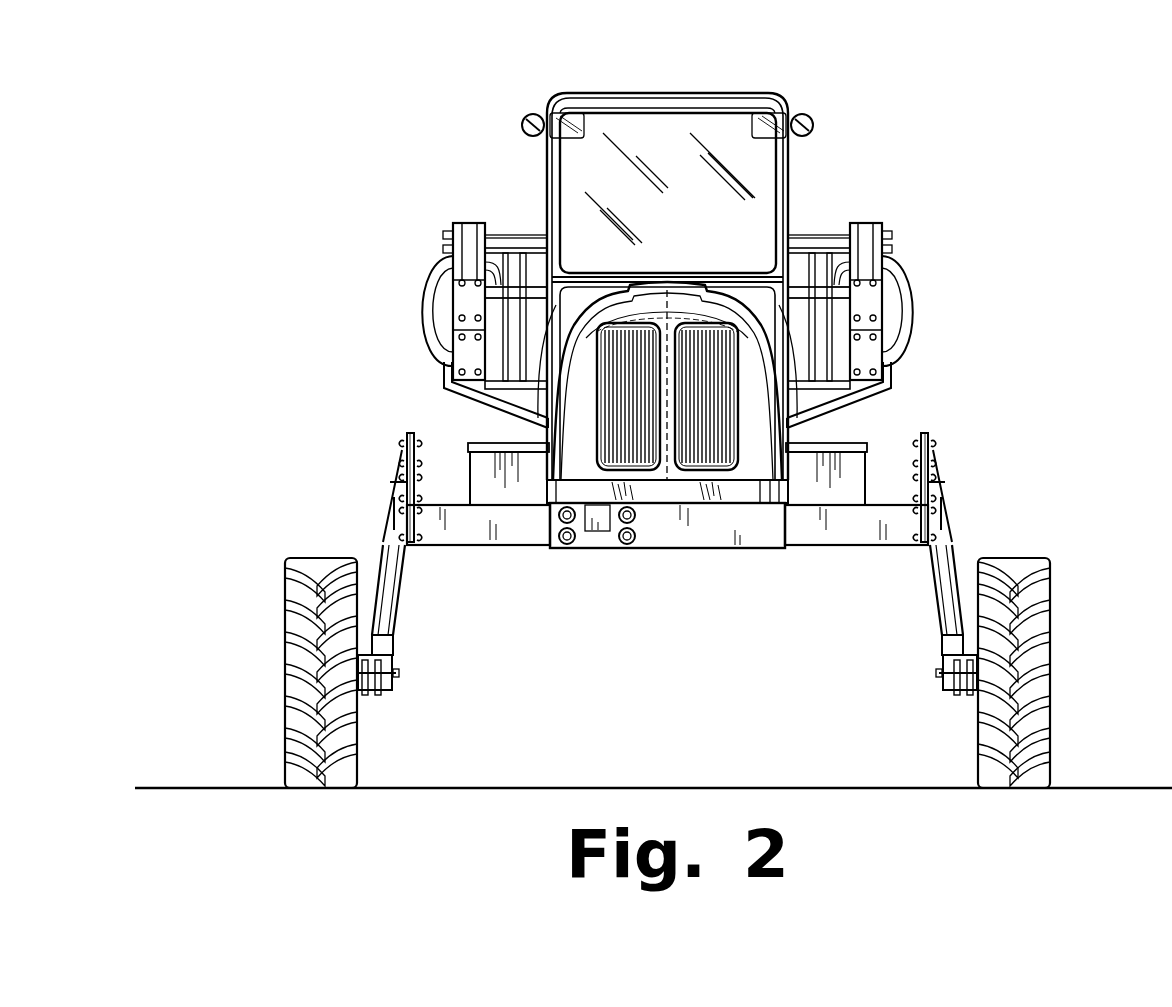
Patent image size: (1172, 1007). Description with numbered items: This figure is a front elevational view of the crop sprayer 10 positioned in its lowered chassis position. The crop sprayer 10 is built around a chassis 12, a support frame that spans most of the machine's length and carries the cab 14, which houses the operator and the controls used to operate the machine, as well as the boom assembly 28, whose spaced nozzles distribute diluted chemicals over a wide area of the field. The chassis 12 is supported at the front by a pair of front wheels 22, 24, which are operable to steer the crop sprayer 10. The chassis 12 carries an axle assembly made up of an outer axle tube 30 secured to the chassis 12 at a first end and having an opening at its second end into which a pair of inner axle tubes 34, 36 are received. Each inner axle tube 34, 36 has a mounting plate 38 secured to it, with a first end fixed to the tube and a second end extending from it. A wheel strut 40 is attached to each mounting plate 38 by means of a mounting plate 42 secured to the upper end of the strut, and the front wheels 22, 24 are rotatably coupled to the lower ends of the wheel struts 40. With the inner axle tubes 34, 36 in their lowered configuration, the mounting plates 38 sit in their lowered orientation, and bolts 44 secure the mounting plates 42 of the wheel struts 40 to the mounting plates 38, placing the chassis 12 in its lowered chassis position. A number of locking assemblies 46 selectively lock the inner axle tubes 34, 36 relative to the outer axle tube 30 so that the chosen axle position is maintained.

The crop sprayer 10 is at (860, 98).
The chassis 12 is at (850, 467).
The cab 14 is at (662, 108).
The front wheel 22 is at (298, 716).
The front wheel 24 is at (1038, 716).
The boom assembly 28 is at (878, 270).
The outer axle tube 30 is at (668, 530).
The inner axle tube 34 is at (522, 528).
The inner axle tube 36 is at (848, 528).
The mounting plate 38 is at (412, 433).
The wheel strut 40 is at (388, 602).
The mounting plate 42 is at (393, 487).
The bolts 44 is at (402, 466).
The locking assembly 46 is at (626, 552).